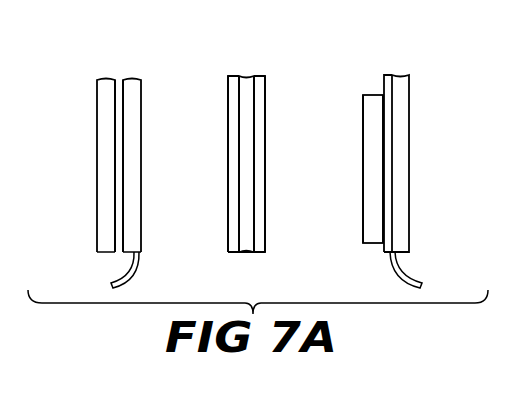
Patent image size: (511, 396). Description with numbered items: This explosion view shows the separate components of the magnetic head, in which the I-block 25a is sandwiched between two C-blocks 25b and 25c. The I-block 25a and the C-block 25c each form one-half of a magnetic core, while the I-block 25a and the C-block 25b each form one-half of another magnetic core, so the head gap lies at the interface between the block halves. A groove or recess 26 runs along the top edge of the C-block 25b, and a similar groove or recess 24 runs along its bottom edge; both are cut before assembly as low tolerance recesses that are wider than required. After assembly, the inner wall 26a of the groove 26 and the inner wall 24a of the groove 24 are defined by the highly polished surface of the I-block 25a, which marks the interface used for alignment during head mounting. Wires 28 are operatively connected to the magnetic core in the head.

The groove or recess 24 is at (376, 246).
The inner wall of groove 24 24a is at (266, 237).
The I-block 25a is at (246, 76).
The C-block 25b is at (401, 76).
The C-block 25c is at (134, 78).
The groove or recess 26 is at (372, 95).
The inner wall of groove 26 26a is at (266, 88).
The wires 28 is at (110, 271).